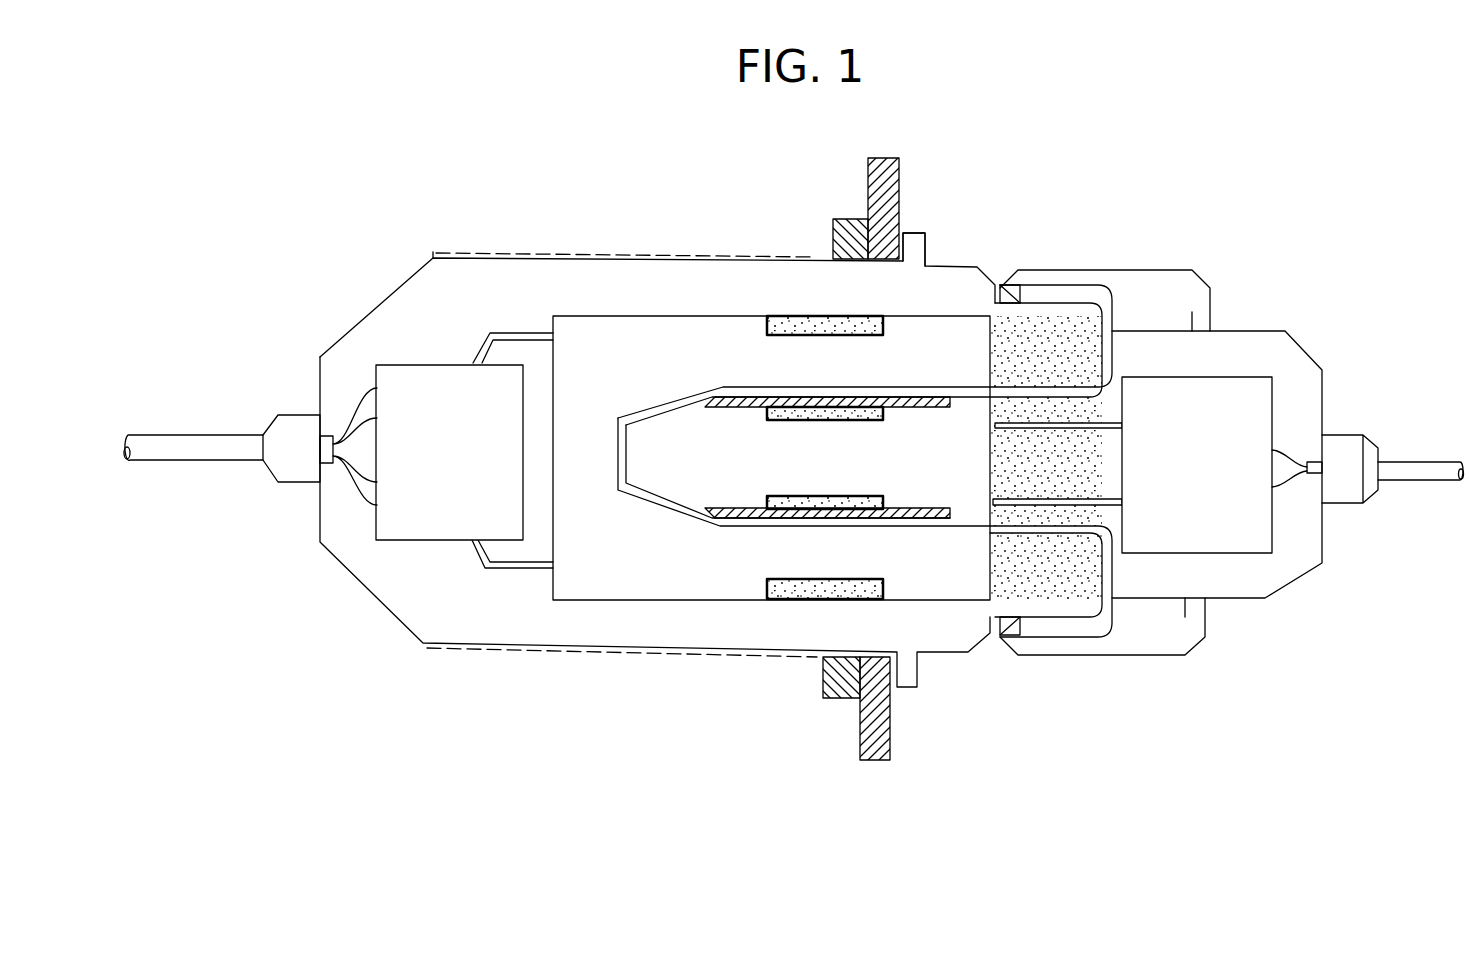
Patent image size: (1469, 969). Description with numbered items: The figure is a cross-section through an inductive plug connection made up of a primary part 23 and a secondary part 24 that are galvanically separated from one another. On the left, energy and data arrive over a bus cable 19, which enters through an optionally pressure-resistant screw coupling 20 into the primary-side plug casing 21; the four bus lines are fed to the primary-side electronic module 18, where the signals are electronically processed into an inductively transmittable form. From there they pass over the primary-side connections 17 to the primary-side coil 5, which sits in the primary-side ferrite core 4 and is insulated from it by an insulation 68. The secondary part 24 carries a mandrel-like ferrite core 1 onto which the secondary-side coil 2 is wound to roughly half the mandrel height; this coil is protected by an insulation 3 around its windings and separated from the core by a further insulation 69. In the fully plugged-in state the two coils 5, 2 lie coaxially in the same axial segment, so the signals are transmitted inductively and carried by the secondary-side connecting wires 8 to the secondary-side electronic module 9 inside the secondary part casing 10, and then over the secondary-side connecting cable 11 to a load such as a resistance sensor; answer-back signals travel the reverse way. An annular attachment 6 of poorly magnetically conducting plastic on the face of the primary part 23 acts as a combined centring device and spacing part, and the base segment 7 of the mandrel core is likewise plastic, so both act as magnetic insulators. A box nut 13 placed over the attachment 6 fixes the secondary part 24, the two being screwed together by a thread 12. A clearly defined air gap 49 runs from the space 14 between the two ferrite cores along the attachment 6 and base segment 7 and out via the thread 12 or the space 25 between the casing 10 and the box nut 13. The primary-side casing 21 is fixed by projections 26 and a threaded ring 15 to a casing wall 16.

The mandrel-like ferrite core 1 is at (683, 449).
The secondary-side coil 2 is at (835, 421).
The insulation 3 is at (938, 409).
The primary-side ferrite core 4 is at (585, 382).
The primary-side coil 5 is at (802, 325).
The annular attachment 6 is at (1062, 330).
The base segment 7 is at (1022, 482).
The secondary-side connecting wires 8 is at (1113, 430).
The secondary-side electronic module 9 is at (1199, 526).
The secondary part casing 10 is at (1278, 539).
The secondary-side connecting cable 11 is at (1418, 482).
The thread 12 is at (1030, 286).
The box nut 13 is at (1167, 278).
The space 14 is at (662, 505).
The threaded ring 15 is at (850, 222).
The casing wall 16 is at (880, 170).
The primary-side connections 17 is at (514, 334).
The primary-side electronic module 18 is at (436, 419).
The bus cable 19 is at (170, 458).
The screw coupling 20 is at (293, 483).
The primary-side plug casing 21 is at (417, 594).
The primary part 23 is at (658, 250).
The secondary part 24 is at (1304, 350).
The space 25 is at (1208, 306).
The projections 26 is at (915, 233).
The air gap 49 is at (972, 392).
The insulation 68 is at (778, 338).
The insulation 69 is at (797, 421).